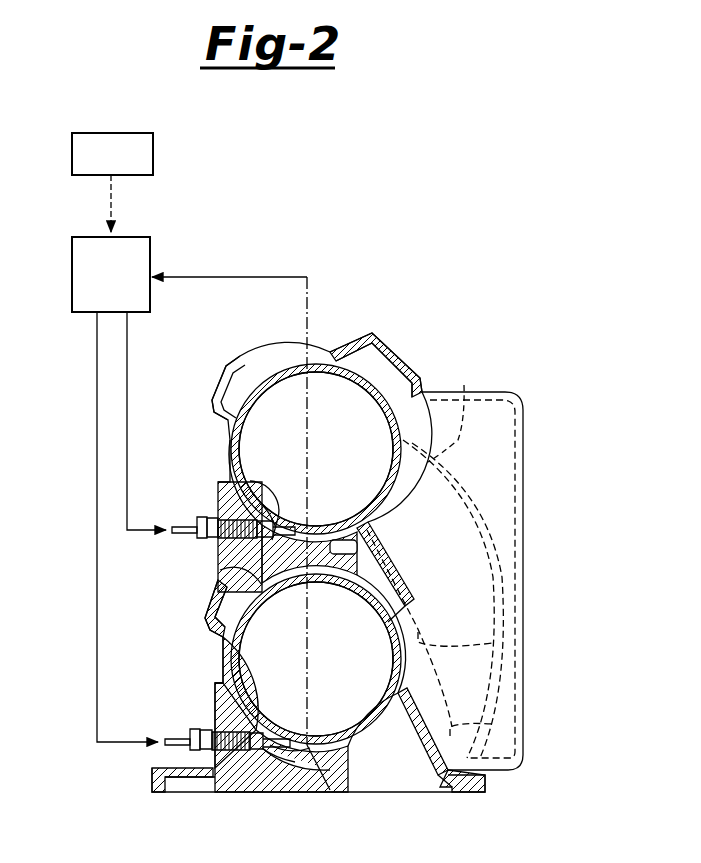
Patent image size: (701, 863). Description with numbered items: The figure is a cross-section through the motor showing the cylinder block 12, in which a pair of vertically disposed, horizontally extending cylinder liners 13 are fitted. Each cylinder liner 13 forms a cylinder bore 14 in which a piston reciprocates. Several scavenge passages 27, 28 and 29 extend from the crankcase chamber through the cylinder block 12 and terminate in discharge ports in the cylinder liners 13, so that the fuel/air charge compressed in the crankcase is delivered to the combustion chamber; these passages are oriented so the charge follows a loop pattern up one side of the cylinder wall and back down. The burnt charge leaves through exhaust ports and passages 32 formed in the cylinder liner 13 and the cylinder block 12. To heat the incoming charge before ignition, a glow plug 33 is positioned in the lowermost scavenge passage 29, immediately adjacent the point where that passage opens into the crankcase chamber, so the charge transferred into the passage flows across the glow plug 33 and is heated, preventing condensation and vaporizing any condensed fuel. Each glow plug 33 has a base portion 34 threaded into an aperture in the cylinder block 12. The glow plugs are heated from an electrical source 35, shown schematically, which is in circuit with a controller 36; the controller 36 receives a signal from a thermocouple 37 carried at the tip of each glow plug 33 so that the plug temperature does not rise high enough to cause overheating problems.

The cylinder block 12 is at (213, 690).
The cylinder liner 13 is at (292, 360).
The cylinder bore 14 is at (392, 450).
The scavenge passage 27 is at (374, 358).
The scavenge passage 28 is at (248, 372).
The scavenge passage 29 is at (265, 510).
The exhaust port and passage 32 is at (466, 392).
The glow plug 33 is at (235, 482).
The base portion 34 is at (198, 540).
The electrical source 35 is at (120, 171).
The controller 36 is at (120, 286).
The thermocouple 37 is at (228, 575).